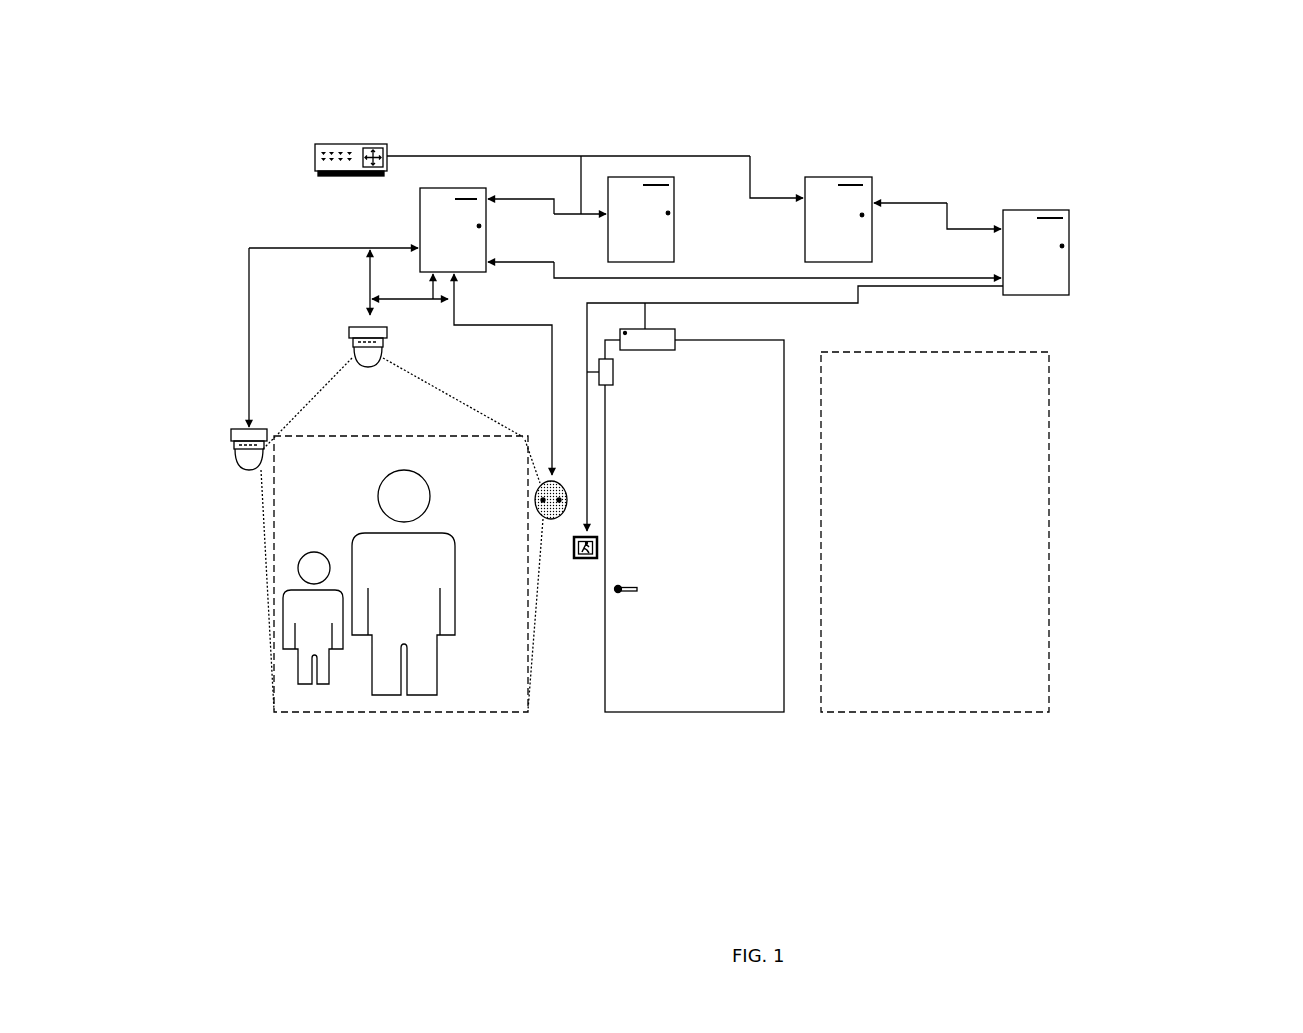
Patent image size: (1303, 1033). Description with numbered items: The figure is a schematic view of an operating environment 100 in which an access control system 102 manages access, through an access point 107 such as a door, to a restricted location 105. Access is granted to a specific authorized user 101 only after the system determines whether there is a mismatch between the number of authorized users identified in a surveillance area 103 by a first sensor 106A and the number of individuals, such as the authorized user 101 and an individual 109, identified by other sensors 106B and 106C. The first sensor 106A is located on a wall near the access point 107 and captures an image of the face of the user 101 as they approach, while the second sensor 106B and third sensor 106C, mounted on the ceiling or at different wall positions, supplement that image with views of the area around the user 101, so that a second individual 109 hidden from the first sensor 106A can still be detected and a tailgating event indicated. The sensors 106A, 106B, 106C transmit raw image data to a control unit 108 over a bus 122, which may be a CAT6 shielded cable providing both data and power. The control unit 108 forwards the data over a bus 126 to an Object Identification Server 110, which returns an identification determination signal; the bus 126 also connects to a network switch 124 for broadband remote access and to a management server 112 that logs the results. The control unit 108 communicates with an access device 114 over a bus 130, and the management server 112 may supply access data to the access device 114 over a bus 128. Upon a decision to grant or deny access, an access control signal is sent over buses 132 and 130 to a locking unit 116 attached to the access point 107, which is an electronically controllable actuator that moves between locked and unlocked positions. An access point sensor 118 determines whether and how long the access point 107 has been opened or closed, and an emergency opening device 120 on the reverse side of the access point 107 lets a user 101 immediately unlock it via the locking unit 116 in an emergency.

The operating environment 100 is at (250, 836).
The authorized user 101 is at (383, 683).
The access control system 102 is at (1232, 78).
The surveillance area 103 is at (401, 574).
The restricted location 105 is at (935, 532).
The first sensor 106A is at (542, 483).
The second sensor 106B is at (386, 343).
The third sensor 106C is at (231, 448).
The access point 107 is at (663, 713).
The control unit 108 is at (467, 184).
The individual 109 is at (305, 677).
The Object Identification Server 110 is at (646, 177).
The management server 112 is at (836, 177).
The access device 114 is at (1040, 210).
The locking unit 116 is at (675, 335).
The access point sensor 118 is at (605, 359).
The emergency opening device 120 is at (587, 560).
The bus 122 is at (352, 247).
The network switch 124 is at (370, 130).
The bus 126 is at (565, 153).
The bus 128 is at (948, 203).
The bus 130 is at (567, 280).
The bus 132 is at (860, 290).